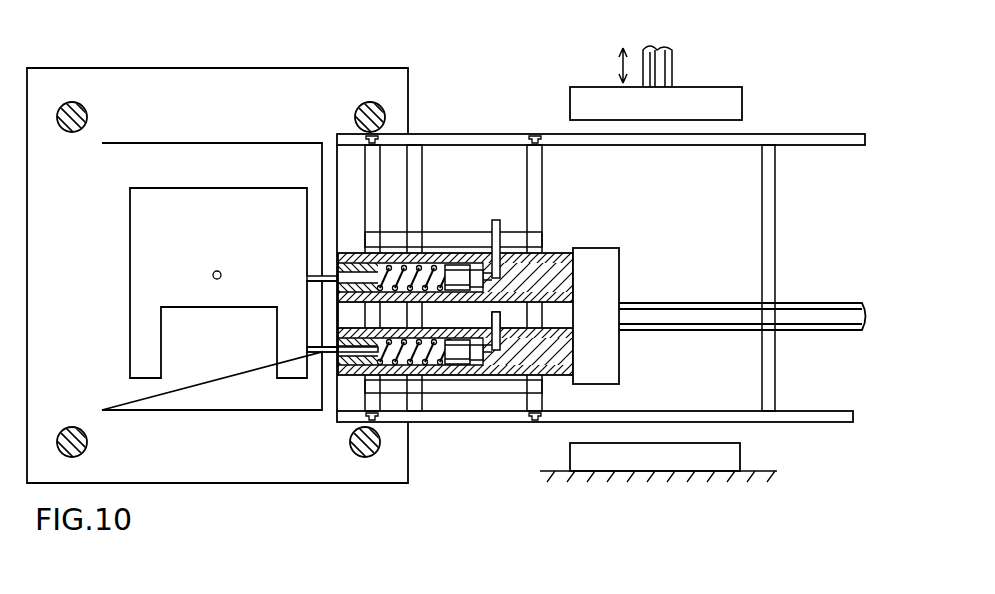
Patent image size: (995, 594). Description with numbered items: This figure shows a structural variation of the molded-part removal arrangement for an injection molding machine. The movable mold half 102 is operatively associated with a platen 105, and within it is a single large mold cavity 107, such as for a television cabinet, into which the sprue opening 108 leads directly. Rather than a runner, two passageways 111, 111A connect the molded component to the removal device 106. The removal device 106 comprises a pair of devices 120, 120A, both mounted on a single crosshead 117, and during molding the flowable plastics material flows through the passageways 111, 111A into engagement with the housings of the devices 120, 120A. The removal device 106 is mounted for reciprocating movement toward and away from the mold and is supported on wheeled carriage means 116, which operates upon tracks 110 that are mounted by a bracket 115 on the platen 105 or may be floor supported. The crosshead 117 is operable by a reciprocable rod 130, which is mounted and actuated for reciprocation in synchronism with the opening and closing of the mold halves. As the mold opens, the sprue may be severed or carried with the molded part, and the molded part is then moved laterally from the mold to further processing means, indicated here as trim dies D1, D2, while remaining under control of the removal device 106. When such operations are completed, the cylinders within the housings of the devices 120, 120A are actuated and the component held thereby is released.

The platen 105 is at (265, 83).
The movable mold half 102 is at (142, 158).
The mold cavity 107 is at (217, 245).
The sprue opening 108 is at (220, 272).
The passageway 111 is at (326, 274).
The passageway 111A is at (322, 352).
The removal device 106 is at (432, 218).
The tracks 110 is at (645, 147).
The bracket 115 is at (520, 167).
The wheeled carriage means 116 is at (470, 238).
The device 120 is at (555, 252).
The device 120A is at (563, 378).
The crosshead 117 is at (607, 279).
The reciprocable rod 130 is at (645, 317).
The trim die D1 is at (740, 105).
The trim die D2 is at (740, 456).